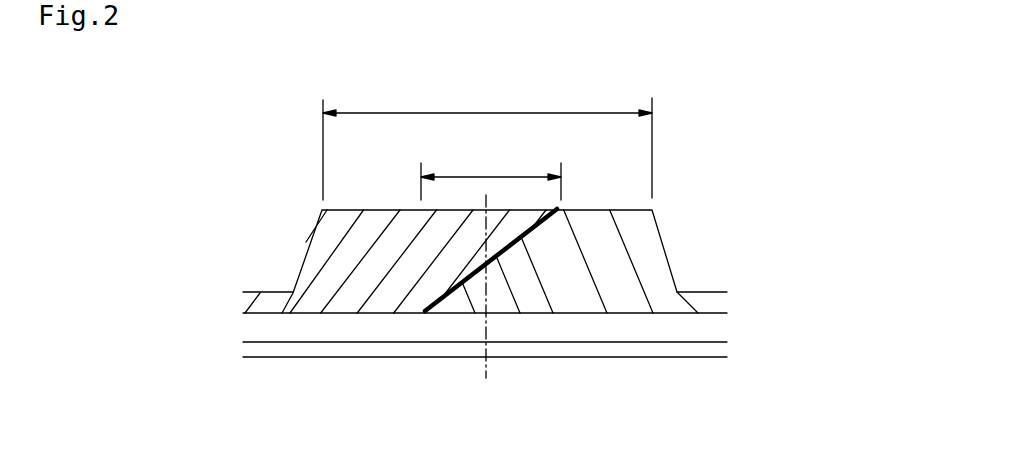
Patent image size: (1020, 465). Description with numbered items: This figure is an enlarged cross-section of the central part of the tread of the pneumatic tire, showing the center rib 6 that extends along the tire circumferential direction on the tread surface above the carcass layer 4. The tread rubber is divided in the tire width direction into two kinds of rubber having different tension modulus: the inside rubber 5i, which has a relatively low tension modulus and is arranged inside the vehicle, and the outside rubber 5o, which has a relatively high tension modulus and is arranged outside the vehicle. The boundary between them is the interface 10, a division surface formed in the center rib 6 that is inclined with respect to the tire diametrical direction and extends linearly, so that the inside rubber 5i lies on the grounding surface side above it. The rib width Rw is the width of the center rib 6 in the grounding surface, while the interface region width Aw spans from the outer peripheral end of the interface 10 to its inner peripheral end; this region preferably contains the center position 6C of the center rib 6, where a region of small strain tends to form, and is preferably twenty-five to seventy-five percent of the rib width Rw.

The center rib 6 is at (358, 216).
The inside rubber 5i is at (365, 288).
The outside rubber 5o is at (573, 282).
The interface 10 is at (451, 293).
The center position 6C is at (487, 304).
The carcass layer 4 is at (697, 343).
The rib width Rw is at (487, 139).
The interface region width Aw is at (491, 171).